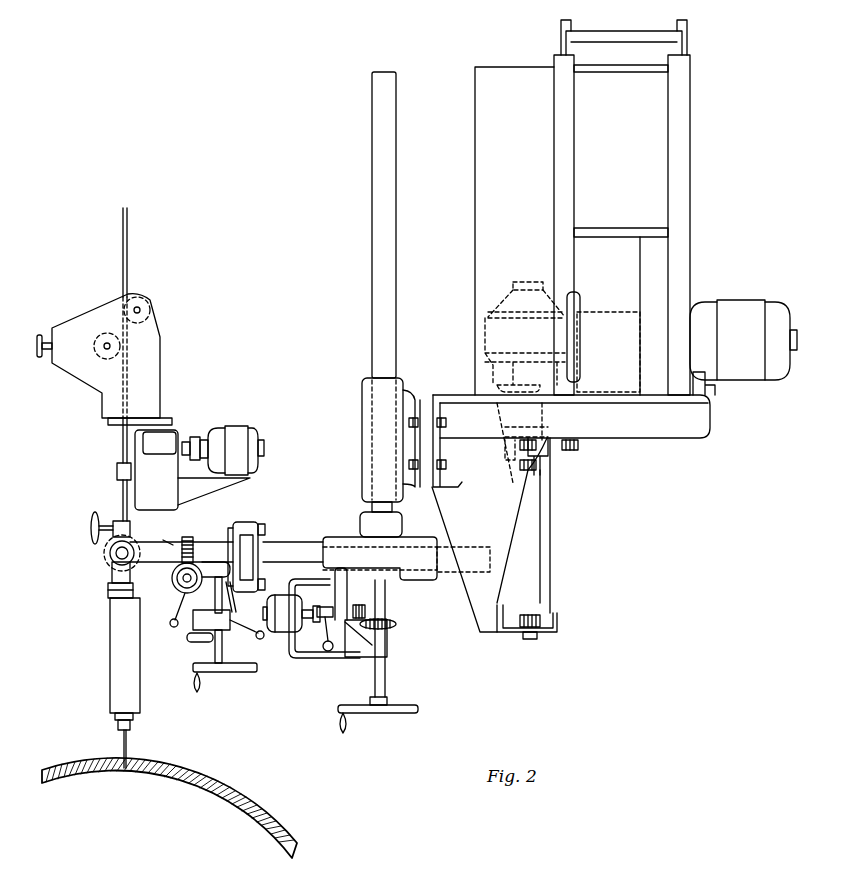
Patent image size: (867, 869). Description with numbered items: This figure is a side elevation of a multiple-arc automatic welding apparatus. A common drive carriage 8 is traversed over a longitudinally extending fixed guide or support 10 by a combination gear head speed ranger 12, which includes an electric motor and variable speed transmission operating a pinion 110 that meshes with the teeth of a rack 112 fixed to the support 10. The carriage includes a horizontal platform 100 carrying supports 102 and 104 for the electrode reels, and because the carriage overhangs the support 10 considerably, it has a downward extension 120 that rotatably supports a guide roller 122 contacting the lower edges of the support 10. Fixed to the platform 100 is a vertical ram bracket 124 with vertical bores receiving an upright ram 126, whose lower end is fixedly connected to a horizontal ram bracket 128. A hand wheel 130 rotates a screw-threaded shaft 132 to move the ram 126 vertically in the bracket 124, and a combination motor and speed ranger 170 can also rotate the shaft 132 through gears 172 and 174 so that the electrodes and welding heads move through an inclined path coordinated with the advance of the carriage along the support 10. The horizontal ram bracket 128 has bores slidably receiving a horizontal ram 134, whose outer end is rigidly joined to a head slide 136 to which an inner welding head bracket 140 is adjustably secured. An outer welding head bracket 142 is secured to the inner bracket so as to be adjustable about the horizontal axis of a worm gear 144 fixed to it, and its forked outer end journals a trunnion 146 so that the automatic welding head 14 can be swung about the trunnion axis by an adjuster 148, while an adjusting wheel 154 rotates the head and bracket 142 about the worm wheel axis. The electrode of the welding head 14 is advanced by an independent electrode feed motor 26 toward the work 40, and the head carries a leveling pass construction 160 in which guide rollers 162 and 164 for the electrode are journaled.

The drive carriage 8 is at (684, 423).
The fixed guide or support 10 is at (545, 533).
The combination gear head speed ranger 12 is at (520, 280).
The automatic welding head 14 is at (153, 494).
The electrode feed motor 26 is at (233, 428).
The work 40 is at (157, 760).
The horizontal platform 100 is at (449, 394).
The reel support 102 is at (554, 107).
The reel support 104 is at (680, 117).
The pinion 110 is at (515, 468).
The rack 112 is at (540, 462).
The downward extension 120 is at (489, 535).
The guide roller 122 is at (523, 613).
The vertical ram bracket 124 is at (364, 411).
The vertical ram 126 is at (385, 252).
The horizontal ram bracket 128 is at (335, 537).
The hand wheel 130 is at (395, 715).
The shaft 132 is at (386, 604).
The horizontal ram 134 is at (281, 545).
The head slide 136 is at (268, 522).
The inner welding head bracket 140 is at (214, 556).
The outer welding head bracket 142 is at (163, 542).
The worm gear 144 is at (185, 537).
The trunnion 146 is at (110, 561).
The adjuster 148 is at (92, 527).
The adjusting wheel 154 is at (178, 589).
The leveling pass construction 160 is at (146, 357).
The guide roller 162 is at (142, 303).
The guide roller 164 is at (105, 338).
The combination motor and speed ranger 170 is at (280, 633).
The gear 172 is at (360, 610).
The gear 174 is at (397, 624).